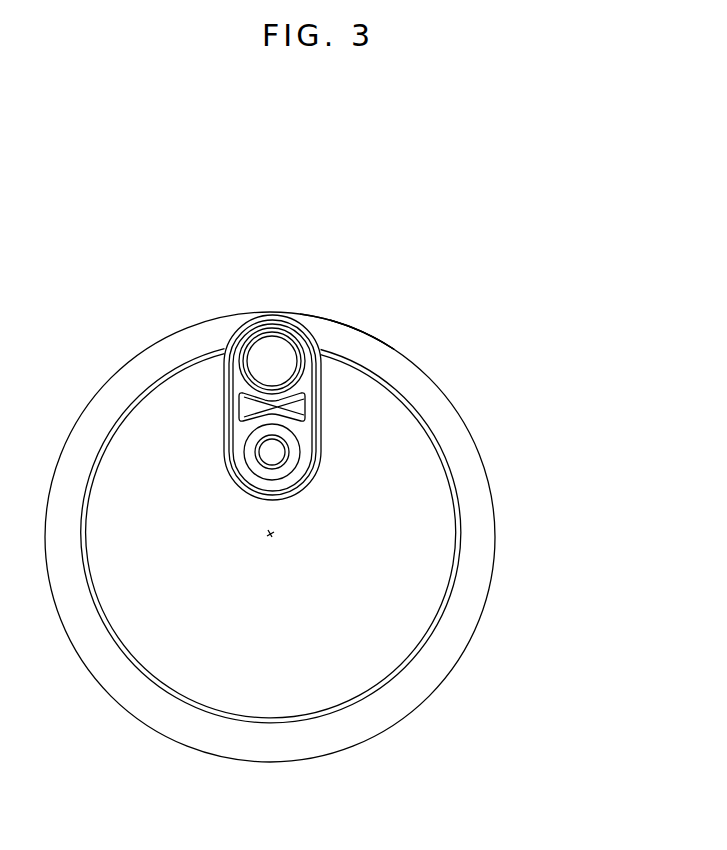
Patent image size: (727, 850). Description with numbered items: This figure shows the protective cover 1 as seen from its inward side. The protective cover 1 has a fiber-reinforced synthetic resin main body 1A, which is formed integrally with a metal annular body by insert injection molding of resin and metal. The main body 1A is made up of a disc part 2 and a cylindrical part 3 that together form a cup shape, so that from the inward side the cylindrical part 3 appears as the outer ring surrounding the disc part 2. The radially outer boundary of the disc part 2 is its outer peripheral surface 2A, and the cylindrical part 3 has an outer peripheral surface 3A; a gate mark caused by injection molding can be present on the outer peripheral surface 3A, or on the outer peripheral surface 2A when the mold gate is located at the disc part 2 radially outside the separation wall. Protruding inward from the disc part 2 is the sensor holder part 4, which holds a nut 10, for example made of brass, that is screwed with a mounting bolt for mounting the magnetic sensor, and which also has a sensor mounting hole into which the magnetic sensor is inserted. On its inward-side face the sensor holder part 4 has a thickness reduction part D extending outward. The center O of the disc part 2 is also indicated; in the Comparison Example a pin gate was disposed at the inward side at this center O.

The protective cover 1 is at (462, 402).
The main body 1A is at (568, 478).
The disc part 2 is at (385, 588).
The outer peripheral surface of the disc part 2A is at (394, 349).
The cylindrical part 3 is at (445, 689).
The outer peripheral surface of the cylindrical part 3A is at (521, 322).
The sensor holder part 4 is at (320, 482).
The nut 10 is at (289, 462).
The thickness reduction part D is at (302, 405).
The center of the disc part O is at (270, 534).